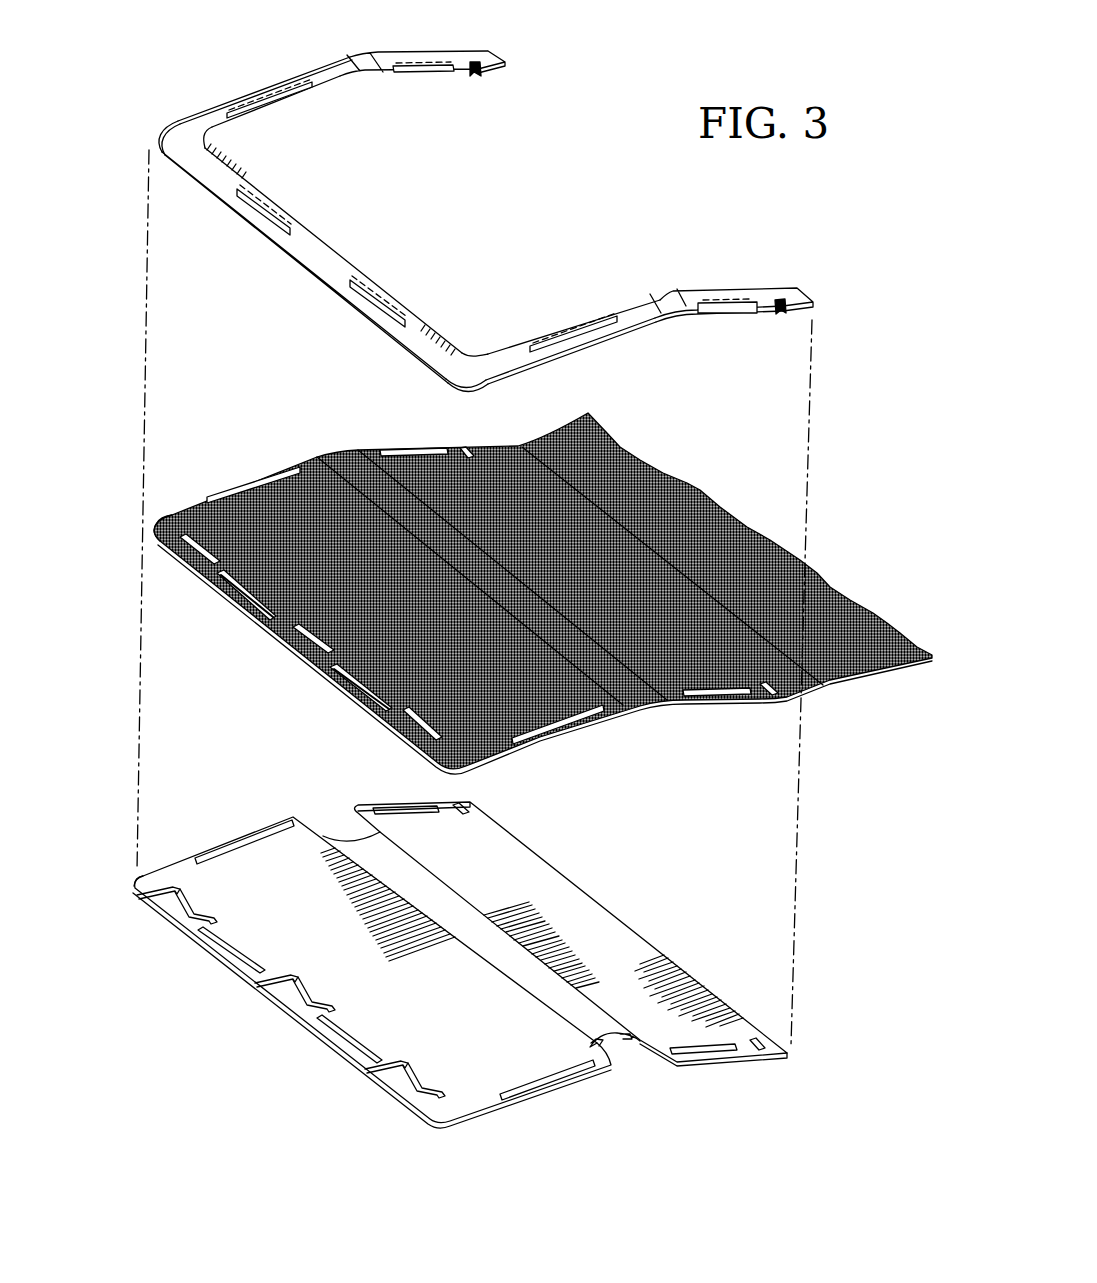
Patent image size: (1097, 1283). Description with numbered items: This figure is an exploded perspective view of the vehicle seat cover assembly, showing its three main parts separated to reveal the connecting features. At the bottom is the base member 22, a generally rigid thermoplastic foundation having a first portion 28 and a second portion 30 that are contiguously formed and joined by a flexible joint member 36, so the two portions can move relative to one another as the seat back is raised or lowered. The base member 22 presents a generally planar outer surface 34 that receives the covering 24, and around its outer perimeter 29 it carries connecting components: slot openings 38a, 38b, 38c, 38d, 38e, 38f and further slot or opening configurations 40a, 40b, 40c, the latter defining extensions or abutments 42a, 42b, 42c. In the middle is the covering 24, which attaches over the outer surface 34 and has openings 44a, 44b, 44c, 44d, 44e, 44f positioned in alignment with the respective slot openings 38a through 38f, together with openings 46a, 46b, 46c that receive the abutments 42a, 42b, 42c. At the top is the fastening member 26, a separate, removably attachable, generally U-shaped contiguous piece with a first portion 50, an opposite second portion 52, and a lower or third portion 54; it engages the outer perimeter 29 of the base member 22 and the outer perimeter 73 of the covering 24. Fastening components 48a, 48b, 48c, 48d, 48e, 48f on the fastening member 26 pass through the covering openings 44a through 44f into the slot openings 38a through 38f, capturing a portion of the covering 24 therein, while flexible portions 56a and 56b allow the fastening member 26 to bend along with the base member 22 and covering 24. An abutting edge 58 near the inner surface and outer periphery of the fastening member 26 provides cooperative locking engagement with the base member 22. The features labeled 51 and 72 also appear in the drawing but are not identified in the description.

The base member 22 is at (620, 940).
The covering 24 is at (710, 517).
The fastening member 26 is at (340, 253).
The first portion 28 is at (530, 873).
The outer perimeter 29 is at (157, 877).
The second portion 30 is at (497, 1098).
The outer surface 34 is at (333, 867).
The joint member 36 is at (590, 1013).
The slot opening 38a is at (233, 850).
The slot opening 38b is at (400, 808).
The slot opening 38c is at (557, 1083).
The slot opening 38d is at (717, 1050).
The slot opening 38e is at (212, 960).
The slot opening 38f is at (333, 1050).
The connecting component 40a is at (177, 913).
The connecting component 40b is at (273, 1007).
The connecting component 40c is at (383, 1090).
The abutment 42a is at (193, 940).
The abutment 42b is at (300, 1030).
The abutment 42c is at (410, 1110).
The opening 44a is at (233, 487).
The opening 44b is at (407, 447).
The opening 44c is at (580, 727).
The opening 44d is at (720, 697).
The opening 44e is at (243, 600).
The opening 44f is at (353, 693).
The opening 46a is at (173, 560).
The opening 46b is at (303, 640).
The opening 46c is at (410, 740).
The fastening component 48a is at (282, 100).
The fastening component 48b is at (423, 77).
The fastening component 48c is at (567, 332).
The fastening component 48d is at (727, 300).
The fastening component 48e is at (267, 207).
The fastening component 48f is at (380, 295).
The first portion 50 is at (235, 102).
The corner 51 is at (133, 893).
The second portion 52 is at (517, 353).
The third portion 54 is at (300, 255).
The flexible portion 56a is at (347, 60).
The flexible portion 56b is at (663, 303).
The abutting edge 58 is at (200, 177).
The panel section 72 is at (320, 497).
The outer perimeter 73 is at (167, 517).